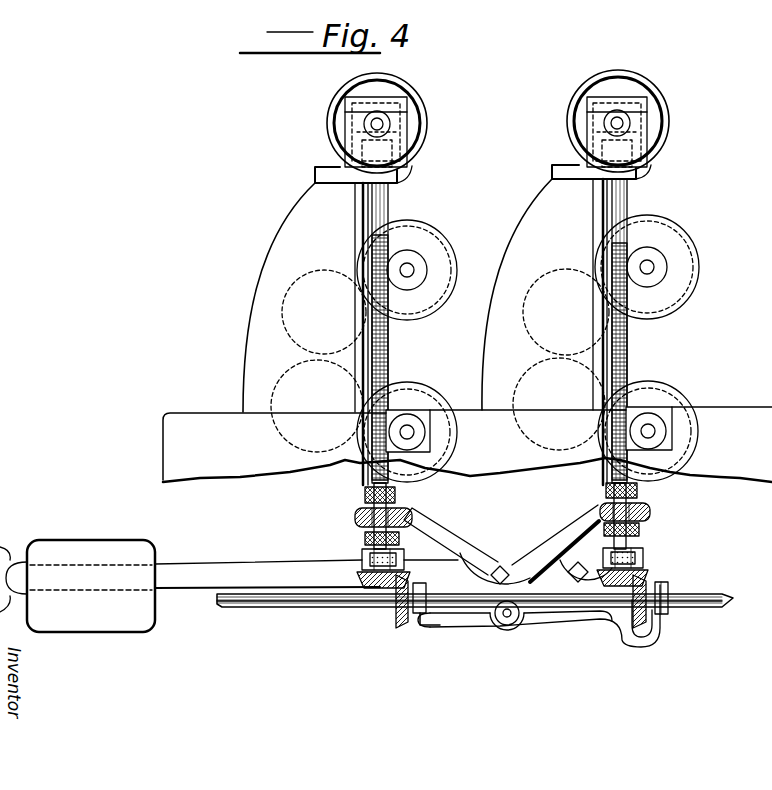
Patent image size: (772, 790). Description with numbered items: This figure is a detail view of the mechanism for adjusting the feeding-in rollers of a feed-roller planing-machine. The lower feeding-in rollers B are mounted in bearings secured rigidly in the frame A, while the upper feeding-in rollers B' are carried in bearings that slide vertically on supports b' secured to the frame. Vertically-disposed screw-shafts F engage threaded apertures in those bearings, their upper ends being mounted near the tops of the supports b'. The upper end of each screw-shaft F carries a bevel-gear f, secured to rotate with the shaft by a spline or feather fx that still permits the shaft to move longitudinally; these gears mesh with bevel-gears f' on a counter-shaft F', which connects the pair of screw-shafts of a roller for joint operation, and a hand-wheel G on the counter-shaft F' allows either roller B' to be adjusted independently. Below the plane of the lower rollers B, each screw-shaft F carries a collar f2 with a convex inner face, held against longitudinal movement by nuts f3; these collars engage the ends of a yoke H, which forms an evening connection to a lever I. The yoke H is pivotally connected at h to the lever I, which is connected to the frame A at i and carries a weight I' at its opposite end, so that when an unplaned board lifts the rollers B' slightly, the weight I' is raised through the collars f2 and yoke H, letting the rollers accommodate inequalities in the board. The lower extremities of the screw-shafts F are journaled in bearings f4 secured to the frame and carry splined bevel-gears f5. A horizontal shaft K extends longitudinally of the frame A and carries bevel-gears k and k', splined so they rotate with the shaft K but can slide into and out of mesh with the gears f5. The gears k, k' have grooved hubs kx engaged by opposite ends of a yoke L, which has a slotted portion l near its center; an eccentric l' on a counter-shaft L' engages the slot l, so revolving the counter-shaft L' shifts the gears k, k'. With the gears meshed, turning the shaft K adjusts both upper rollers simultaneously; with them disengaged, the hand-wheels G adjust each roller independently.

The hand-wheel G is at (502, 119).
The counter-shaft F' is at (528, 132).
The bevel-gears f' is at (463, 122).
The bevel-gears f is at (403, 306).
The spline or feather fx is at (489, 188).
The supports b' is at (426, 332).
The upper feeding-in rollers B' is at (539, 265).
The screw-shafts F is at (513, 364).
The lower feeding-in rollers B is at (535, 420).
The frame-work A is at (467, 444).
The collars f2 is at (503, 515).
The nuts f3 is at (502, 500).
The bearings f4 is at (492, 562).
The bevel-gears f5 is at (502, 617).
The lever I is at (306, 574).
The weight I' is at (77, 586).
The horizontal shaft K is at (475, 619).
The bevel-gear k is at (411, 621).
The bevel-gear k' is at (659, 614).
The grooved hubs kx is at (569, 622).
The yoke H is at (508, 544).
The pivot h is at (513, 573).
The connection i is at (578, 559).
The yoke L is at (539, 625).
The counter-shaft L' is at (541, 633).
The slotted portion l is at (510, 633).
The eccentric l' is at (503, 640).